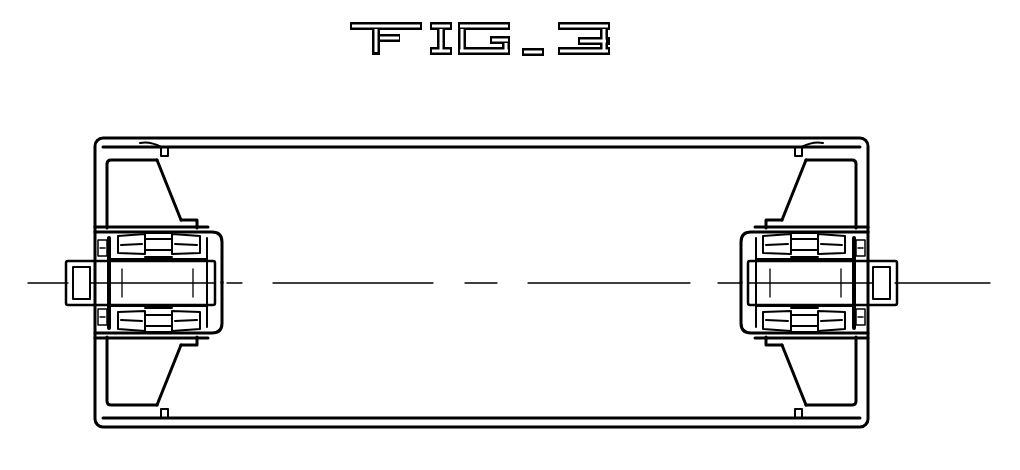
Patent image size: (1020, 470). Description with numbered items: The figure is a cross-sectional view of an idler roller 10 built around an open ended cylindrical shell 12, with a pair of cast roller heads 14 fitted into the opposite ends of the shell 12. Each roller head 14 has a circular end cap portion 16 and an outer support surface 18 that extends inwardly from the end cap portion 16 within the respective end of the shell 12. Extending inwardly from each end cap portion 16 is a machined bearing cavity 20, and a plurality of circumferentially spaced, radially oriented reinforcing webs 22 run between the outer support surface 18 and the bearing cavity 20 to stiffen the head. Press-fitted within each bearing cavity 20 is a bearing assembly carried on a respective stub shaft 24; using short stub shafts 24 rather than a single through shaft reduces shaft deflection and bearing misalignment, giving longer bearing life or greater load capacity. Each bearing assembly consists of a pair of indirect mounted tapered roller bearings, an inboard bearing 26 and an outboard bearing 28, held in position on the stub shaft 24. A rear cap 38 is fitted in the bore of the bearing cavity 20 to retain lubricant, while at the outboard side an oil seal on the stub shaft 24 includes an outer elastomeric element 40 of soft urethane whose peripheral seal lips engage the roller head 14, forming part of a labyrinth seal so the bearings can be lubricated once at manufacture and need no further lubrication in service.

The idler roller 10 is at (679, 121).
The cylindrical shell 12 is at (425, 140).
The roller head 14 is at (213, 213).
The end cap portion 16 is at (868, 192).
The outer support surface 18 is at (143, 146).
The bearing cavity 20 is at (201, 338).
The reinforcing web 22 is at (155, 192).
The stub shaft 24 is at (220, 268).
The inboard tapered roller bearing 26 is at (218, 241).
The outboard tapered roller bearing 28 is at (104, 247).
The rear cap 38 is at (223, 304).
The outer elastomeric element 40 is at (97, 311).